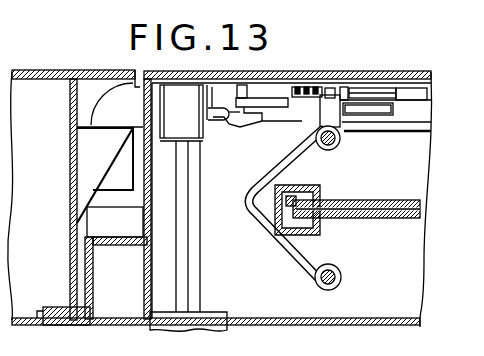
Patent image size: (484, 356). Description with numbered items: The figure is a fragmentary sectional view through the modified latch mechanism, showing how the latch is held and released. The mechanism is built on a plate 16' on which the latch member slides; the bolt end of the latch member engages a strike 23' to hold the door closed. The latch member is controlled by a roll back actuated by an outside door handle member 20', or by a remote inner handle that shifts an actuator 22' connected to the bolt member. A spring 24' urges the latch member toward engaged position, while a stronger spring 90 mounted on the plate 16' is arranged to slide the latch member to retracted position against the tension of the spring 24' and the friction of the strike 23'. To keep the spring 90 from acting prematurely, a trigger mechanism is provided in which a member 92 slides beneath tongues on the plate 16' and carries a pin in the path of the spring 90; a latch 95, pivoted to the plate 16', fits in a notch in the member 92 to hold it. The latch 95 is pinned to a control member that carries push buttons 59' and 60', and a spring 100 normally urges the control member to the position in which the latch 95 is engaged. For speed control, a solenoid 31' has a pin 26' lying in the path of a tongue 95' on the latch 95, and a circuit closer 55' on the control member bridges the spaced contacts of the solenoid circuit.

The strike 23' is at (92, 201).
The solenoid 31' is at (190, 97).
The outside door handle member 20' is at (194, 236).
The pin 26' is at (222, 130).
The tongue 95' is at (231, 133).
The circuit closer 55' is at (257, 126).
The latch 95 is at (256, 76).
The spring 100 is at (275, 92).
The plate 16' is at (372, 76).
The member 92 is at (378, 92).
The spring 90 is at (407, 92).
The spring 24' is at (386, 132).
The actuator 22' is at (387, 147).
The push button 59' is at (331, 153).
The push button 60' is at (343, 269).